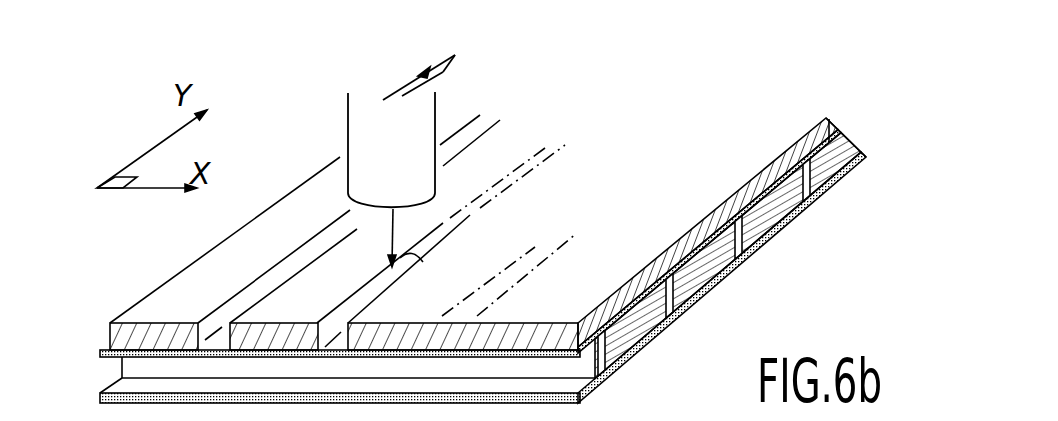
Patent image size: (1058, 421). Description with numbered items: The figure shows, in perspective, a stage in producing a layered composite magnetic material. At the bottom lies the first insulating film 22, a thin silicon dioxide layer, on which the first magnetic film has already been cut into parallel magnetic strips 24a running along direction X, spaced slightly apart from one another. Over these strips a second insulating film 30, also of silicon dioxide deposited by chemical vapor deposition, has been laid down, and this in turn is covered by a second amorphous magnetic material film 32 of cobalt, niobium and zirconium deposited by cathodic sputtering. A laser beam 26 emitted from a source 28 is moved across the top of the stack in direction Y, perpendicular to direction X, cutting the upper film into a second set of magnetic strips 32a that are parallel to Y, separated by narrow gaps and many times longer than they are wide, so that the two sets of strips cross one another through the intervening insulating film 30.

The first insulating film 22 is at (100, 399).
The magnetic strips 24a is at (637, 322).
The laser beam 26 is at (393, 237).
The source 28 is at (360, 118).
The second insulating film 30 is at (100, 350).
The second amorphous magnetic material film 32 is at (749, 188).
The magnetic strips 32a is at (263, 315).